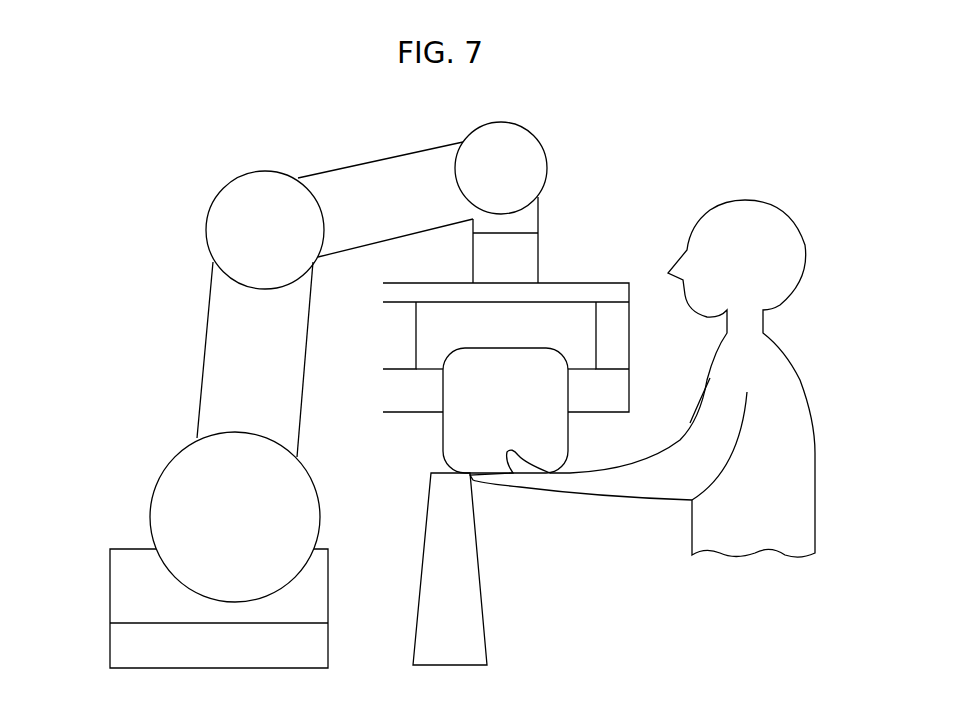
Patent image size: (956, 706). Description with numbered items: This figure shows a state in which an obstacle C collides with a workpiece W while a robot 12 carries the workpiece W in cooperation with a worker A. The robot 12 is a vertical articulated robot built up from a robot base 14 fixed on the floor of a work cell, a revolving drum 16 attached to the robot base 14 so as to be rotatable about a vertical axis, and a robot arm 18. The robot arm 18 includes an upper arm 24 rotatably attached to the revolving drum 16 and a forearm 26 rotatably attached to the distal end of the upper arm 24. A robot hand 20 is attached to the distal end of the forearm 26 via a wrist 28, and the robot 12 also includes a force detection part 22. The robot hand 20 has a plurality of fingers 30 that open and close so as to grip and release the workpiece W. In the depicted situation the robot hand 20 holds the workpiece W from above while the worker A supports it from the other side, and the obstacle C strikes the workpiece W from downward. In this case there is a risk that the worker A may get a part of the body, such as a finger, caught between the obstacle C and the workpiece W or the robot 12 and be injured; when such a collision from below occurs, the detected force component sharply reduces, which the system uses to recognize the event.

The robot 12 is at (195, 160).
The robot base 14 is at (117, 648).
The revolving drum 16 is at (127, 557).
The robot arm 18 is at (178, 268).
The robot hand 20 is at (383, 430).
The force detection part 22 is at (528, 244).
The upper arm 24 is at (228, 371).
The forearm 26 is at (378, 183).
The wrist 28 is at (560, 189).
The fingers 30 is at (387, 327).
The workpiece W is at (447, 433).
The obstacle C is at (468, 618).
The worker A is at (788, 215).